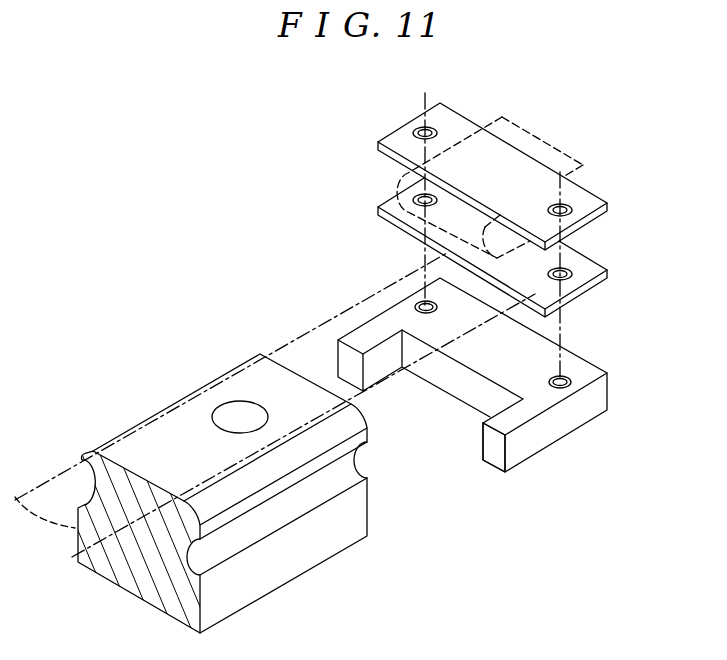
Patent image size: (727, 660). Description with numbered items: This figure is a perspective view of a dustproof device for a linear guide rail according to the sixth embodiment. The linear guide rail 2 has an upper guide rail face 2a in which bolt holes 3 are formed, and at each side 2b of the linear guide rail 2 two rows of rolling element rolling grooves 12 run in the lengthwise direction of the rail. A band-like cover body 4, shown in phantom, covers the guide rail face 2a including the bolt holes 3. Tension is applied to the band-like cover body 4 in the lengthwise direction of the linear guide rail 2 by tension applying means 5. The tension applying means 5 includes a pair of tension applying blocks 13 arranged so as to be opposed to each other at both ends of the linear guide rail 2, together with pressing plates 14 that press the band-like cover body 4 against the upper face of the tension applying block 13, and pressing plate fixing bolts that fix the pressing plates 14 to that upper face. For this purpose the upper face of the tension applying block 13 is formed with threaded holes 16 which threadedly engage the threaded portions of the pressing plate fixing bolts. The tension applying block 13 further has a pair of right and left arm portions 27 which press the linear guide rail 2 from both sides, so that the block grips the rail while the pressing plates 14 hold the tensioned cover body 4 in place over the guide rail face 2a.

The linear guide rail 2 is at (374, 508).
The guide rail face 2a is at (170, 446).
The side face of the linear guide rail 2b is at (278, 568).
The bolt hole 3 is at (236, 401).
The band-like cover body 4 is at (545, 141).
The tension applying means 5 is at (600, 314).
The rolling element rolling groove 12 is at (365, 420).
The tension applying block 13 is at (590, 443).
The pressing plate 14 is at (612, 205).
The threaded hole 16 is at (562, 374).
The arm portion 27 is at (520, 448).